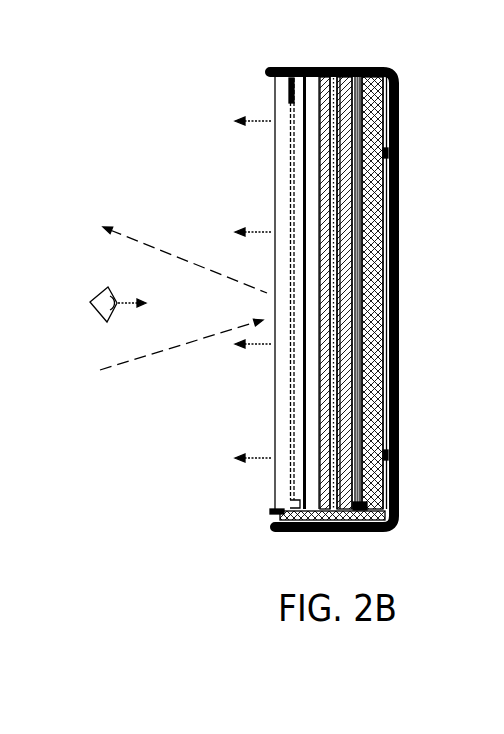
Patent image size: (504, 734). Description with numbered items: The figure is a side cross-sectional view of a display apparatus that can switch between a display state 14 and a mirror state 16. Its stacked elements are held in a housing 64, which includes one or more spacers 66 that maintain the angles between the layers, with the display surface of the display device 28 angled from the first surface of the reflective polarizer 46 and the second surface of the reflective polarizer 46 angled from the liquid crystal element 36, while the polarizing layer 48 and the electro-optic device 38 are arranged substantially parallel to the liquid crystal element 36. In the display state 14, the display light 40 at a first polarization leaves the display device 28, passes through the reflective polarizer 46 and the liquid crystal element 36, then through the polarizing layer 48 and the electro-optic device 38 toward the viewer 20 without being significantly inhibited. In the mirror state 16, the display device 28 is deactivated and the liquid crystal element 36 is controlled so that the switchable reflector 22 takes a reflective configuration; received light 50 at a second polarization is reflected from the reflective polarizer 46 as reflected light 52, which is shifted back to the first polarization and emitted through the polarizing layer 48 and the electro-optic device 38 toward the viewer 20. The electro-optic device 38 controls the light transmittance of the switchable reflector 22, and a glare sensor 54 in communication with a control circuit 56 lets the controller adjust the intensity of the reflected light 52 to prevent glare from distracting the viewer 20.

The display state 14 is at (177, 158).
The mirror state 16 is at (321, 307).
The viewer 20 is at (98, 302).
The switchable reflector 22 is at (329, 74).
The display device 28 is at (350, 125).
The liquid crystal element 36 is at (337, 92).
The electro-optic device 38 is at (282, 101).
The display light 40 is at (252, 232).
The reflective polarizer 46 is at (343, 227).
The polarizing layer 48 is at (323, 273).
The received light 50 is at (157, 352).
The reflected light 52 is at (127, 237).
The glare sensor 54 is at (270, 513).
The control circuit 56 is at (370, 472).
The housing 64 is at (398, 377).
The spacers 66 is at (398, 128).